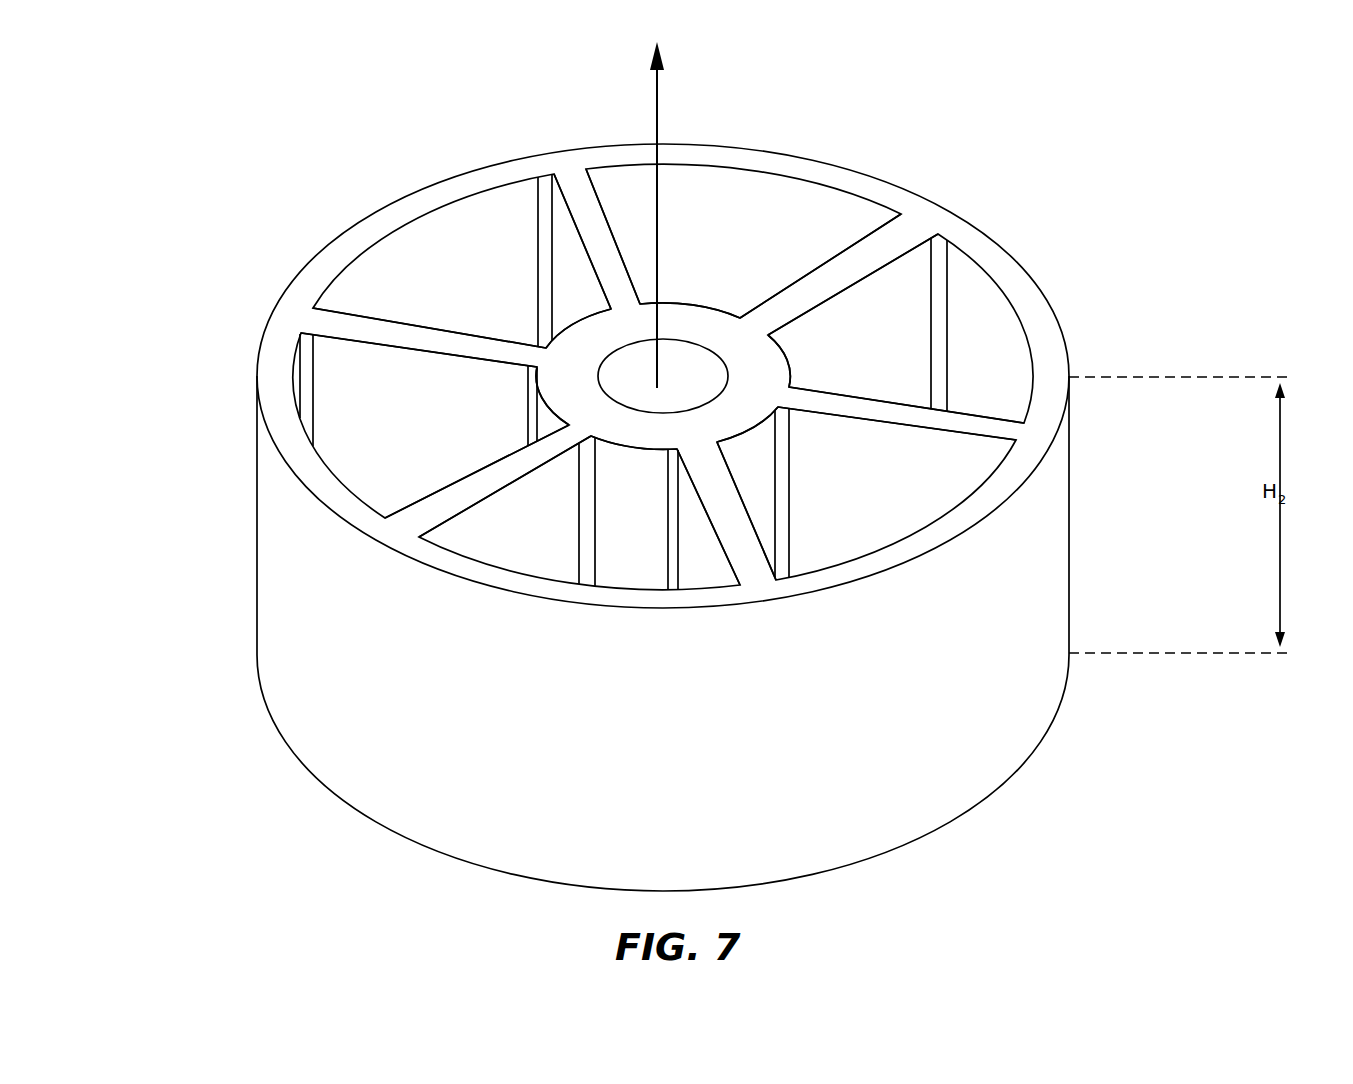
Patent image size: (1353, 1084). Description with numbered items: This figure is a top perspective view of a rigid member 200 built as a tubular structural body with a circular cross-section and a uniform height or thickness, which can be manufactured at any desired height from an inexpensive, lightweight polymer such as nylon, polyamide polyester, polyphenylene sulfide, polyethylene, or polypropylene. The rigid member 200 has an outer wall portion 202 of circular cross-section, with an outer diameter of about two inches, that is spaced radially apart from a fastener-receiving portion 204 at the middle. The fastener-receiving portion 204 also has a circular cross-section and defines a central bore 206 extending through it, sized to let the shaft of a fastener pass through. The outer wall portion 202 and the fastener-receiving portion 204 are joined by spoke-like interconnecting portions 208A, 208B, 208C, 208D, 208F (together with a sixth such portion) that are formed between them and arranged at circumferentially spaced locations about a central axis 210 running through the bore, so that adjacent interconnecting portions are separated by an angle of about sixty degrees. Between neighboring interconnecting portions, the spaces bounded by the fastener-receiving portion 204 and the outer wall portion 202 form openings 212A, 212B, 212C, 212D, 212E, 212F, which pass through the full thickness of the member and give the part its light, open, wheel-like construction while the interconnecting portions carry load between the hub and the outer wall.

The rigid member 200 is at (1183, 172).
The outer wall portion 202 is at (713, 151).
The fastener-receiving portion 204 is at (750, 371).
The central bore 206 is at (693, 390).
The interconnecting portion 208A is at (873, 253).
The interconnecting portion 208B is at (983, 427).
The interconnecting portion 208C is at (730, 522).
The interconnecting portion 208D is at (347, 327).
The interconnecting portion 208F is at (587, 208).
The central axis 210 is at (661, 98).
The opening 212A is at (893, 359).
The opening 212B is at (900, 500).
The opening 212C is at (555, 543).
The opening 212D is at (445, 445).
The opening 212E is at (483, 280).
The opening 212F is at (755, 242).